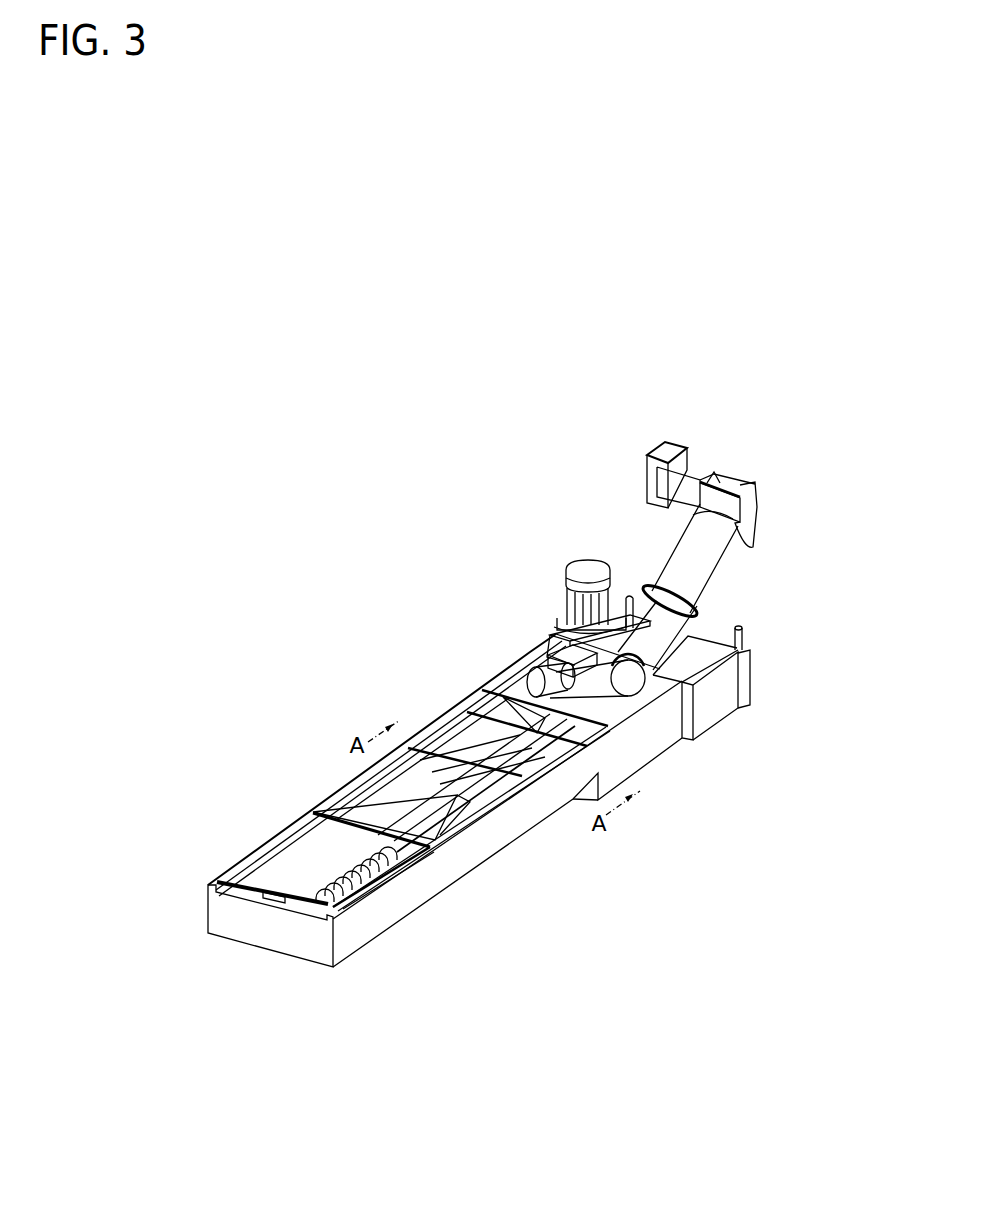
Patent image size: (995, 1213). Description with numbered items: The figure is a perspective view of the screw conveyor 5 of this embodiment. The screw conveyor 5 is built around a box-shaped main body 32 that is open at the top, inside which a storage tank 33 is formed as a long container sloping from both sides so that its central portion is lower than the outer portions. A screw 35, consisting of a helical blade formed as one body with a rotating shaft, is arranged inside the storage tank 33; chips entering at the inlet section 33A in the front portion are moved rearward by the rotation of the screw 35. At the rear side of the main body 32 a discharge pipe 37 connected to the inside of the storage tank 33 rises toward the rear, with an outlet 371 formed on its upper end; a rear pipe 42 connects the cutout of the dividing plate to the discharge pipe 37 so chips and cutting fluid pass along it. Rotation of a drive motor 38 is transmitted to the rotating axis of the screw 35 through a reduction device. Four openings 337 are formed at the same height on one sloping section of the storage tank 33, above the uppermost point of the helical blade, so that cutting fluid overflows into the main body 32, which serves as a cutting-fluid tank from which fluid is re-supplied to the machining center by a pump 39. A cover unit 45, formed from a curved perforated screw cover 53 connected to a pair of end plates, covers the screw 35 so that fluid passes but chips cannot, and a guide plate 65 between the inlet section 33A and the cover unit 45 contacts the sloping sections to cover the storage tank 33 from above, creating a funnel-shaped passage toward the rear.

The screw conveyor 5 is at (388, 427).
The main body 32 is at (312, 943).
The storage tank 33 is at (367, 793).
The inlet section 33A is at (268, 840).
The screw 35 is at (305, 884).
The discharge pipe 37 is at (678, 573).
The outlet 371 is at (727, 485).
The drive motor 38 is at (547, 652).
The pump 39 is at (587, 566).
The rear pipe 42 is at (525, 677).
The cover unit 45 is at (473, 740).
The screw cover 53 is at (583, 743).
The guide plate 65 is at (428, 827).
The openings 337 is at (500, 795).